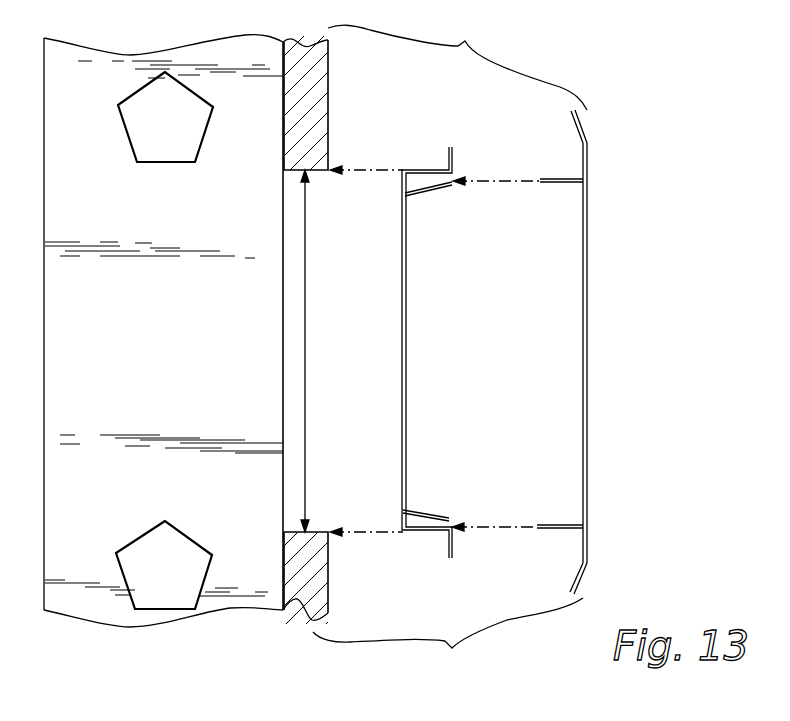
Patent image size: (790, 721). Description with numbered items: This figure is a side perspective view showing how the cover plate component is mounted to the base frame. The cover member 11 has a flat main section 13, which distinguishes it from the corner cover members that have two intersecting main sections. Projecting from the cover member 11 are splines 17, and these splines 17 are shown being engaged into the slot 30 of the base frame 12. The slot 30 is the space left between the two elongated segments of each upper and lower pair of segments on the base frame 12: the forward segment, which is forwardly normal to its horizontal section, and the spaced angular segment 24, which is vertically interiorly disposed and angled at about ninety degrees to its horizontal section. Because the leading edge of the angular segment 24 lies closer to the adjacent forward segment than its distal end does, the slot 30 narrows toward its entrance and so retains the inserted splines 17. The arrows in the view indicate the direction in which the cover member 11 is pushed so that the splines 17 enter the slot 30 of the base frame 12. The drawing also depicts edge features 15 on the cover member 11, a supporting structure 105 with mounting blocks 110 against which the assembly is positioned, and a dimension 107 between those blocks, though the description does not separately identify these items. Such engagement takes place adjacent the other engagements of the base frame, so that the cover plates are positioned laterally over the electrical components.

The cover member 11 is at (602, 468).
The base frame 12 is at (420, 292).
The flat main section 13 is at (586, 423).
The edge tab 15 is at (576, 124).
The splines 17 is at (563, 186).
The angular segment 24 is at (429, 510).
The slot 30 is at (452, 522).
The support structure 105 is at (158, 361).
The opening height 107 is at (305, 303).
The mounting block 110 is at (328, 88).